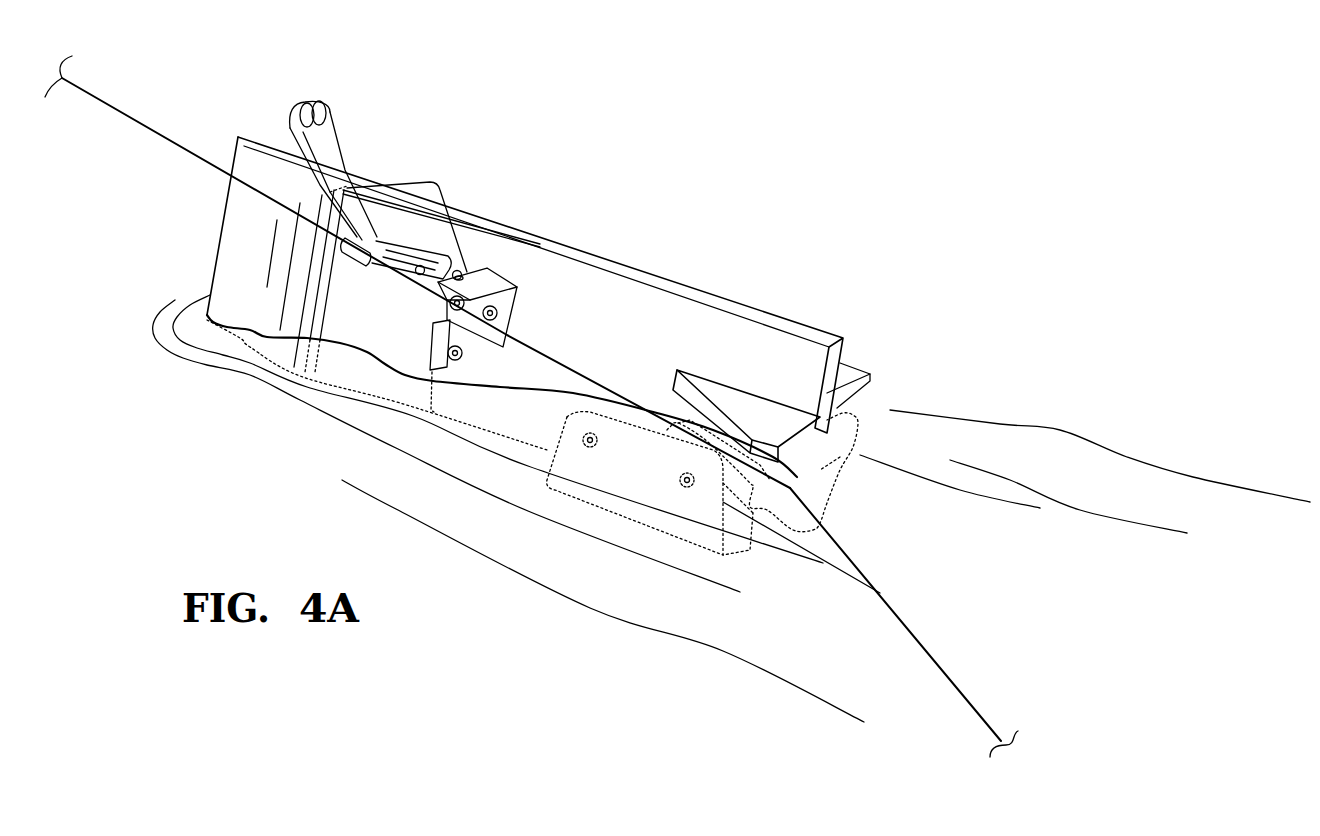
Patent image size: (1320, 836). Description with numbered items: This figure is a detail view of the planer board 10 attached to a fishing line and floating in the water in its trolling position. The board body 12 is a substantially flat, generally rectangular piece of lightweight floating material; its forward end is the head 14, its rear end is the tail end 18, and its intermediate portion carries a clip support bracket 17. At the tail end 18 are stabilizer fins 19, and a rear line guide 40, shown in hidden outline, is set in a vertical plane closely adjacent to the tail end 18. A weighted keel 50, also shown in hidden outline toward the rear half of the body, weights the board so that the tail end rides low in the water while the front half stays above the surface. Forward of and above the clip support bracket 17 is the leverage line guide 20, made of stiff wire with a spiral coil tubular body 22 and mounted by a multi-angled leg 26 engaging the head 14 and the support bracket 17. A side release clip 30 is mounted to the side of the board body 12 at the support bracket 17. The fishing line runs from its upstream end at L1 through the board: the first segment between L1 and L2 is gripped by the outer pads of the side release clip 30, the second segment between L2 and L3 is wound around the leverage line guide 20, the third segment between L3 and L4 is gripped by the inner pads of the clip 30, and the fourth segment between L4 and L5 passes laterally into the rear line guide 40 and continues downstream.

The planer board 10 is at (668, 193).
The board body 12 is at (591, 249).
The head 14 is at (257, 137).
The clip support bracket 17 is at (480, 283).
The tail end 18 is at (848, 393).
The stabilizer fins 19 is at (755, 407).
The leverage line guide 20 is at (348, 122).
The tubular body 22 is at (286, 100).
The multi-angled leg 26 is at (457, 265).
The side release clip 30 is at (387, 283).
The rear line guide 40 is at (855, 465).
The weighted keel 50 is at (700, 548).
The fishing line point L1 is at (153, 128).
The fishing line point L2 is at (290, 128).
The fishing line point L3 is at (374, 215).
The fishing line point L4 is at (570, 367).
The fishing line point L5 is at (927, 653).